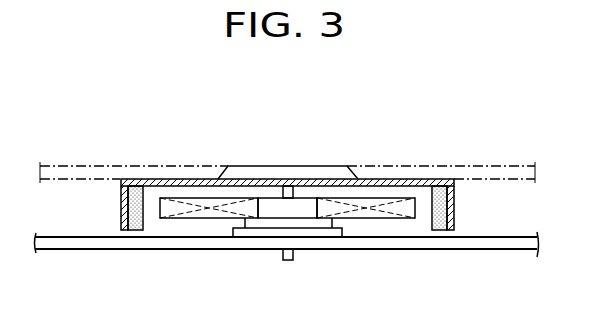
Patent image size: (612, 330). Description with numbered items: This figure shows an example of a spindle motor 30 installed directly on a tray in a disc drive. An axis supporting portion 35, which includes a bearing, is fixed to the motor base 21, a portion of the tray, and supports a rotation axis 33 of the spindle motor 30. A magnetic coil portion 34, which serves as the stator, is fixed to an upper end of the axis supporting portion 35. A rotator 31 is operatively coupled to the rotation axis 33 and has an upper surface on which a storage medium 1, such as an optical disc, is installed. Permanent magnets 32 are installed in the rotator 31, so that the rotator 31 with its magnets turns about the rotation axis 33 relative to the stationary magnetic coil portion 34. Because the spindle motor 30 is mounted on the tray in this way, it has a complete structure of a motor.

The storage medium 1 is at (57, 166).
The spindle motor 30 is at (460, 142).
The rotator 31 is at (193, 180).
The permanent magnets 32 is at (145, 198).
The rotation axis 33 is at (303, 190).
The magnetic coil portion 34 is at (185, 218).
The axis supporting portion 35 is at (243, 237).
The motor base 21 is at (493, 250).